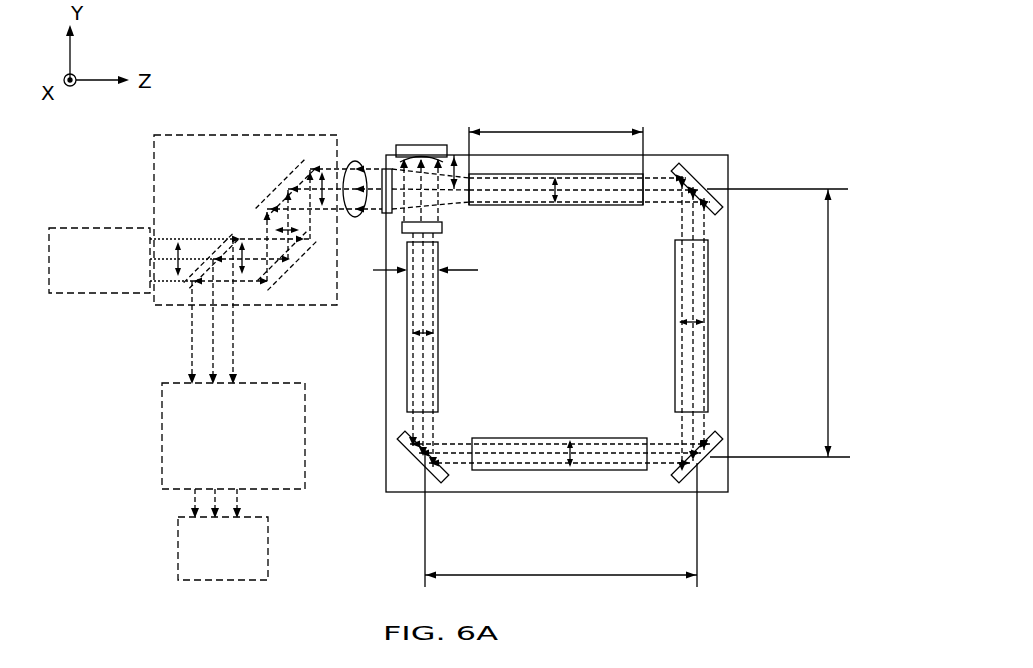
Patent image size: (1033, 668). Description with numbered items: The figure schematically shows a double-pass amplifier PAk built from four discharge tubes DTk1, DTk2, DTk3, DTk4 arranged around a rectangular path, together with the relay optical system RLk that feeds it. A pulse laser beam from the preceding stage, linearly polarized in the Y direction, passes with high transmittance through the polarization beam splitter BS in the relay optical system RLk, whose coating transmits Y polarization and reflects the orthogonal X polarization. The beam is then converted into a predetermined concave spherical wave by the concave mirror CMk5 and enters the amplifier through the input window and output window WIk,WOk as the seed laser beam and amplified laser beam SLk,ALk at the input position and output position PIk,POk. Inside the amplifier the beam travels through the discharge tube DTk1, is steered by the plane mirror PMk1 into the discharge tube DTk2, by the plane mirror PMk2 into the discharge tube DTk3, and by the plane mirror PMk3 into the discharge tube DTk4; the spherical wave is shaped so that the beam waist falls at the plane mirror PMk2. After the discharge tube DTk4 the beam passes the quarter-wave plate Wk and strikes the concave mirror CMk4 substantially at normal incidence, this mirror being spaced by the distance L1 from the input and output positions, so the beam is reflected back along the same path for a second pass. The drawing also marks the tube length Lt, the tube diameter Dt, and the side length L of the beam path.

The amplifier PAk is at (647, 103).
The relay optical system RLk is at (257, 152).
The concave mirror CMk5 is at (262, 198).
The concave mirror CMk4 is at (431, 146).
The polarization beam splitter BS is at (232, 237).
The seed laser beam and amplified laser beam SLk,ALk is at (358, 218).
The input window and output window WIk,WOk is at (383, 169).
The input position and output position PIk,POk is at (425, 192).
The quarter-wave plate Wk is at (443, 229).
The distance L1 is at (458, 163).
The length of discharge tube Lt is at (556, 154).
The diameter of discharge tube Dt is at (427, 257).
The discharge tube DTk1 is at (556, 206).
The discharge tube DTk2 is at (676, 326).
The discharge tube DTk3 is at (563, 437).
The discharge tube DTk4 is at (438, 325).
The plane mirror PMk1 is at (690, 178).
The plane mirror PMk2 is at (700, 462).
The plane mirror PMk3 is at (413, 456).
The side length of beam path L is at (637, 388).